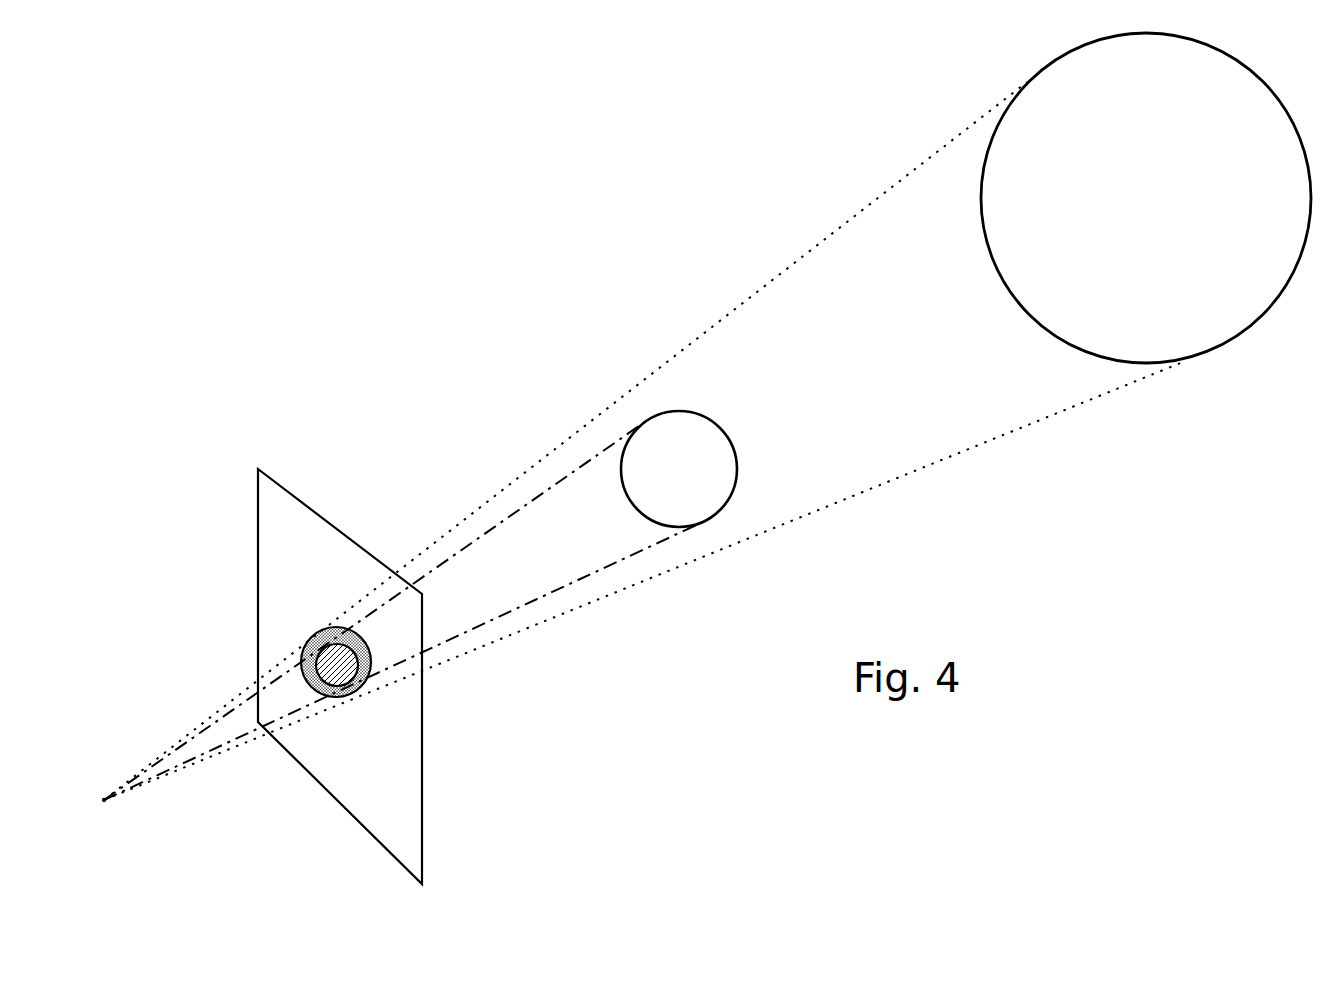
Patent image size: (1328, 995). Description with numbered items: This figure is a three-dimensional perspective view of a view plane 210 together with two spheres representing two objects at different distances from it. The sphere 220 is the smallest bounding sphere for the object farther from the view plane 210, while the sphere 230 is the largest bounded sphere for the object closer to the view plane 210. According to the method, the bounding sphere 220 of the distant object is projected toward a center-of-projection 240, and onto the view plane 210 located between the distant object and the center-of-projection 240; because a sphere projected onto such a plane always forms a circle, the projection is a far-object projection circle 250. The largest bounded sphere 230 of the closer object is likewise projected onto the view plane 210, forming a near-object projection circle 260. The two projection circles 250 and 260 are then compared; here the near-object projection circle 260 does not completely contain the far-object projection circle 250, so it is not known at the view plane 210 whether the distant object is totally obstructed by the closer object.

The view plane 210 is at (290, 492).
The sphere 220 is at (1036, 324).
The sphere 230 is at (714, 422).
The center-of-projection 240 is at (104, 800).
The far-object projection circle 250 is at (375, 670).
The near-object projection circle 260 is at (365, 687).